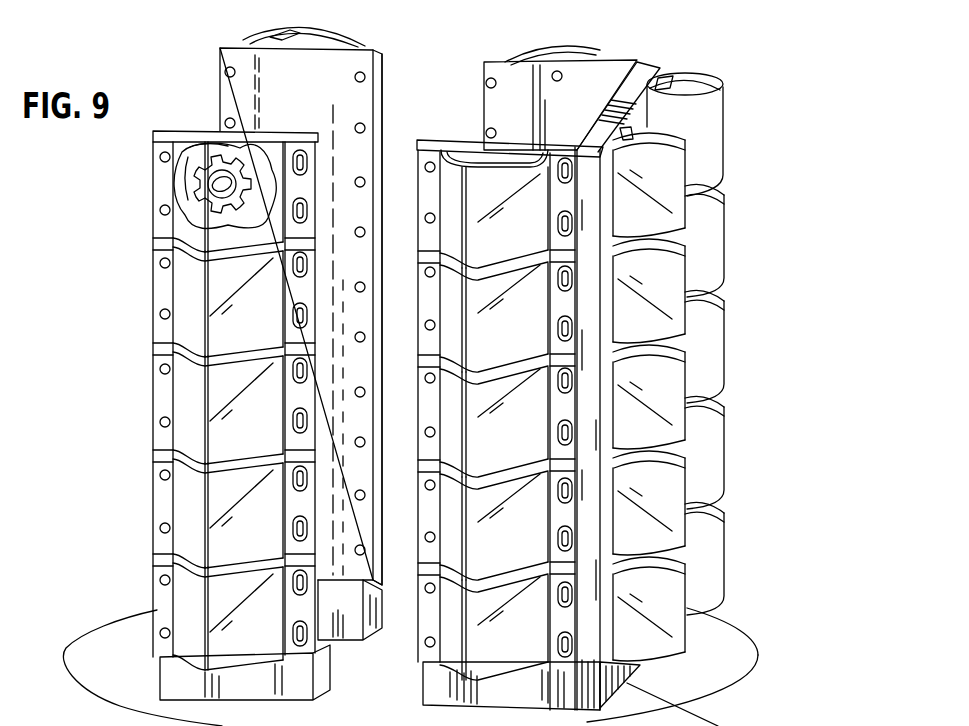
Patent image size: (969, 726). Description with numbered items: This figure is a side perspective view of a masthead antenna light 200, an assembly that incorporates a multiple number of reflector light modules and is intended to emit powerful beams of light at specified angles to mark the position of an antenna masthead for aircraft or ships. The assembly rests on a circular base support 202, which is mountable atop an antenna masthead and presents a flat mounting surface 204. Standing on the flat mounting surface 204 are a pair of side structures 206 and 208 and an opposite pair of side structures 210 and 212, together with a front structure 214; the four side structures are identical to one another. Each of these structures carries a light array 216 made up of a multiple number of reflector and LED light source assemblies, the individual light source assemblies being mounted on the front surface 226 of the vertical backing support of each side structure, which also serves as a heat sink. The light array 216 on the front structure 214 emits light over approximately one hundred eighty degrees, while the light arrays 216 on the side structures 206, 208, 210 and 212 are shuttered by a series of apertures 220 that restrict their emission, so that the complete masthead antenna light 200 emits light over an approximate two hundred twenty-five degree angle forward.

The masthead antenna light 200 is at (602, 43).
The circular base support 202 is at (750, 667).
The flat mounting surface 204 is at (717, 651).
The side structure 206 is at (155, 277).
The side structure 208 is at (452, 140).
The side structure 210 is at (222, 50).
The side structure 212 is at (660, 62).
The front structure 214 is at (705, 66).
The light array 216 is at (308, 33).
The apertures 220 is at (160, 207).
The front surface 226 is at (419, 178).